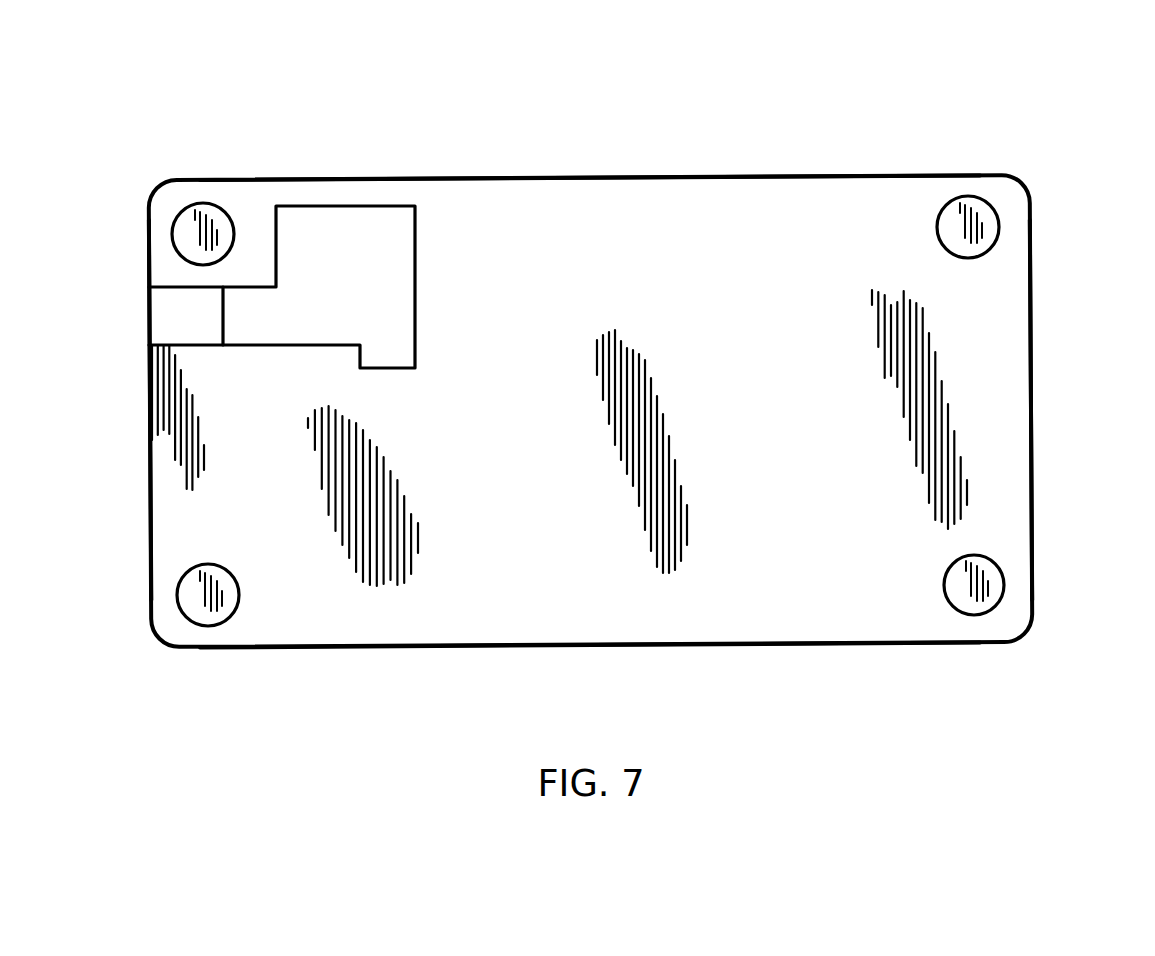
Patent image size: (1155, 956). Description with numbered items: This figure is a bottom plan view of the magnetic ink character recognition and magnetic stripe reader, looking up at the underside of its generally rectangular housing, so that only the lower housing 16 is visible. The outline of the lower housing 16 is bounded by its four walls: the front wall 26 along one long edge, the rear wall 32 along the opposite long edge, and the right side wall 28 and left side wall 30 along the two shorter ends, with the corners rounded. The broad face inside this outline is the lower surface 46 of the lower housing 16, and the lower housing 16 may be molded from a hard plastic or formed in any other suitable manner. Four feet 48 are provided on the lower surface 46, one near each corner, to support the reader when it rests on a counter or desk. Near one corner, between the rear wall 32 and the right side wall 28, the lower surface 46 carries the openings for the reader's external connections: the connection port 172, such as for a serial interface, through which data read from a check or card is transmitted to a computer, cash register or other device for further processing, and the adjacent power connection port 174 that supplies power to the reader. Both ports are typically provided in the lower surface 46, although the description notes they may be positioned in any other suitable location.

The lower housing 16 is at (187, 522).
The front wall 26 is at (706, 643).
The right side wall 28 is at (149, 445).
The left side wall 30 is at (1032, 440).
The rear wall 32 is at (588, 178).
The lower surface 46 is at (357, 627).
The feet 48 is at (187, 223).
The connection port 172 is at (315, 227).
The power connection port 174 is at (287, 325).